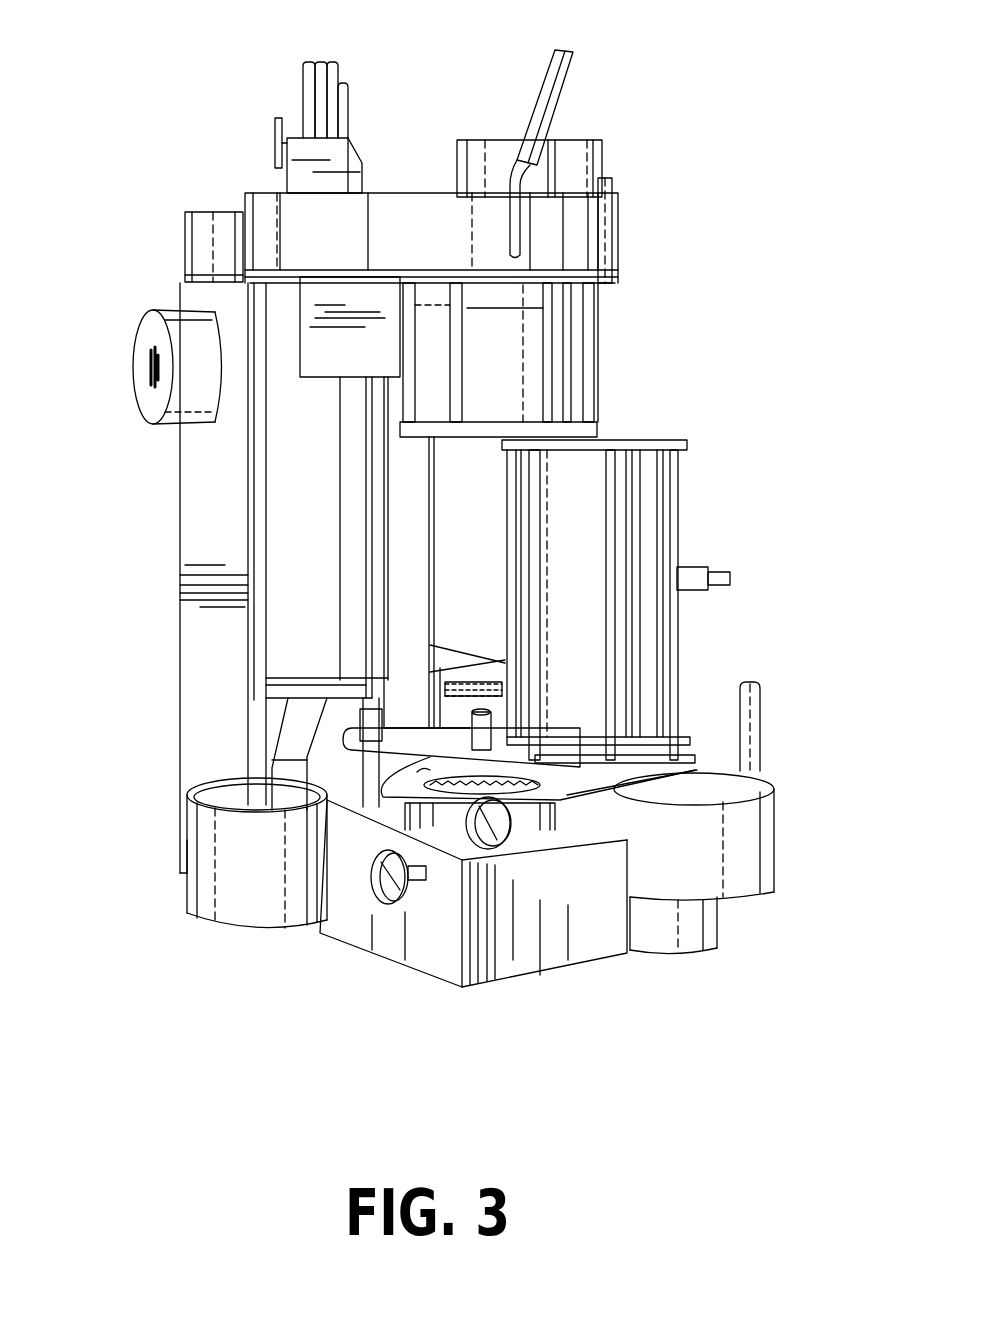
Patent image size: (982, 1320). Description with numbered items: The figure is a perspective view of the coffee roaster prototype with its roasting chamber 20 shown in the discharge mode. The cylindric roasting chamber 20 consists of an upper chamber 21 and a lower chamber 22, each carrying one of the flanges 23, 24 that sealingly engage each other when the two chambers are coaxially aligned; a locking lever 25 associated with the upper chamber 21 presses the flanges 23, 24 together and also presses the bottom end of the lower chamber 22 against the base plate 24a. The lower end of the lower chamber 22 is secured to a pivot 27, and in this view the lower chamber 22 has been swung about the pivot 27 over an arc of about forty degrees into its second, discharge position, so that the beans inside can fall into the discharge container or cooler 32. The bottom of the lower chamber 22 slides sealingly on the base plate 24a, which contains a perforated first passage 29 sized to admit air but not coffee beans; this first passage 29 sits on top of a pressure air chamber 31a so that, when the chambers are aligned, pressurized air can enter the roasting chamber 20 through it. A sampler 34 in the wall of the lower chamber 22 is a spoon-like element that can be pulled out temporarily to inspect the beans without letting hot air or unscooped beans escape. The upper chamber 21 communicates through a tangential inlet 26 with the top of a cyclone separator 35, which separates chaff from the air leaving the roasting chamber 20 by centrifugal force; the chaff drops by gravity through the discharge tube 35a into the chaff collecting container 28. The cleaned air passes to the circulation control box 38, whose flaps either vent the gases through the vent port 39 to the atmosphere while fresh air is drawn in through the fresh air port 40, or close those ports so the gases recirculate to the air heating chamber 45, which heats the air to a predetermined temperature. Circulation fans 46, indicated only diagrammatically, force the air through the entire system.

The roasting chamber 20 is at (688, 381).
The upper chamber 21 is at (517, 366).
The lower chamber 22 is at (602, 585).
The flange 23 is at (480, 438).
The flange 24 is at (658, 437).
The base plate 24a is at (622, 797).
The locking lever 25 is at (560, 92).
The tangential inlet 26 is at (444, 246).
The pivot 27 is at (360, 730).
The chaff collecting container 28 is at (245, 900).
The first passage 29 is at (428, 768).
The pressure air chamber 31a is at (580, 887).
The discharge container 32 is at (692, 848).
The sampler 34 is at (712, 567).
The cyclone separator 35 is at (324, 515).
The discharge tube 35a is at (285, 757).
The circulation control box 38 is at (362, 165).
The vent port 39 is at (312, 100).
The fresh air port 40 is at (350, 90).
The air heating chamber 45 is at (241, 515).
The circulation fan 46 is at (140, 360).